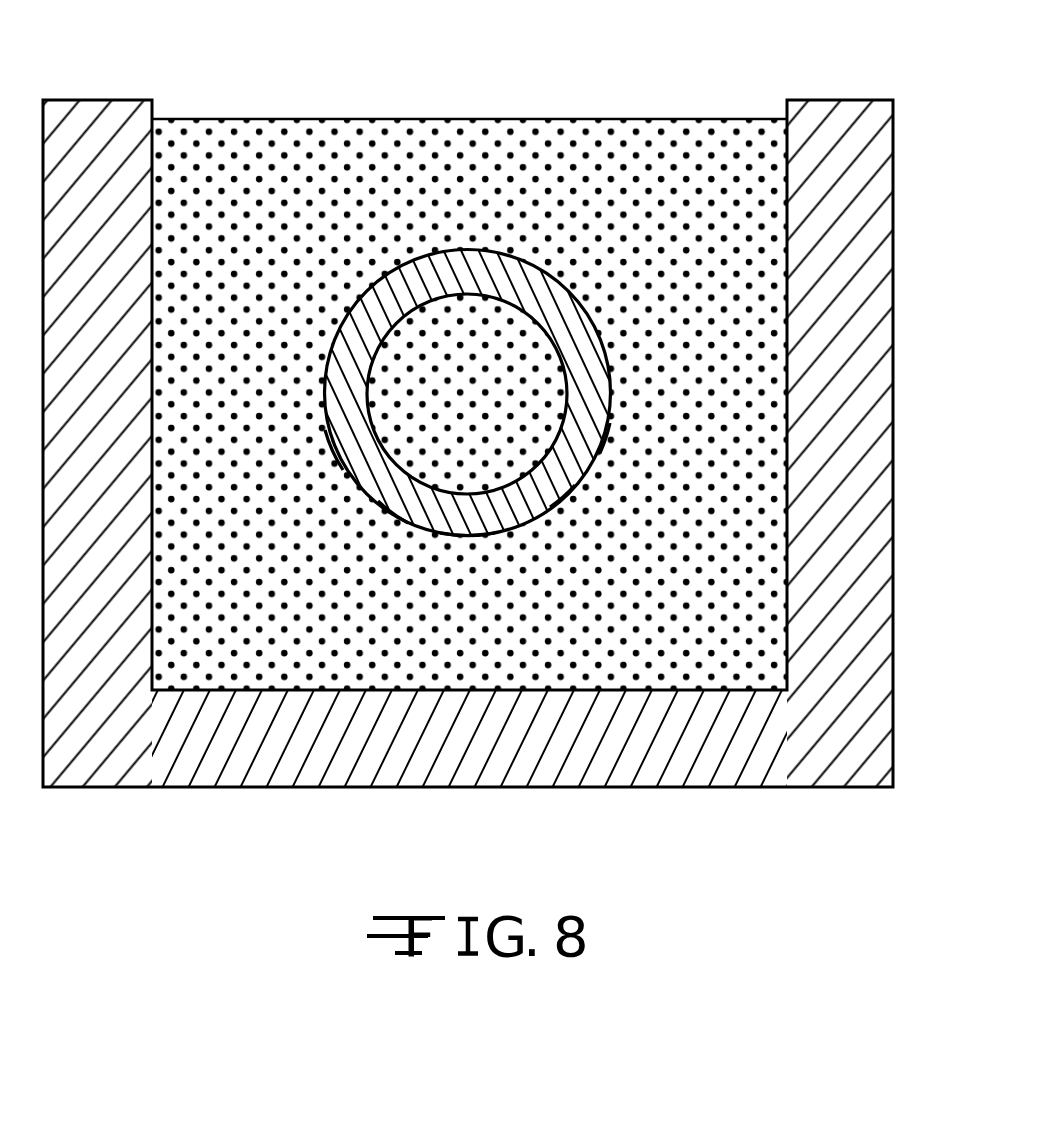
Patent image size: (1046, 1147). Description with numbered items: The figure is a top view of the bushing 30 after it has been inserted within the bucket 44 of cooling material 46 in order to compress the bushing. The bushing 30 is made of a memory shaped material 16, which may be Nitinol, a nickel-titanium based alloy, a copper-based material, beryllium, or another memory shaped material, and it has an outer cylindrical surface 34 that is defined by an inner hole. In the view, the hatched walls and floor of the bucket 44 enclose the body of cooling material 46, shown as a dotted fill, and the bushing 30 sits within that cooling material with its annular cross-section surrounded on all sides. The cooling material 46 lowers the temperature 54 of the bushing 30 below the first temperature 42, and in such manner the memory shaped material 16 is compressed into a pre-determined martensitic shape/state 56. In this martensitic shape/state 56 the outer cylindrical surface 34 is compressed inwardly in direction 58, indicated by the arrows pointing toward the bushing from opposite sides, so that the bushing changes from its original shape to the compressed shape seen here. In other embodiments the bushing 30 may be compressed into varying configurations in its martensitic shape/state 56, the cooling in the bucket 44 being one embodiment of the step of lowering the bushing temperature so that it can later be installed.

The memory shaped material 16 is at (468, 537).
The bushing 30 is at (568, 292).
The outer cylindrical surface 34 is at (343, 470).
The first temperature 42 is at (550, 507).
The bucket 44 is at (833, 100).
The cooling material 46 is at (287, 155).
The temperature 54 is at (600, 453).
The martensitic shape/state 56 is at (408, 523).
The direction 58 is at (300, 393).